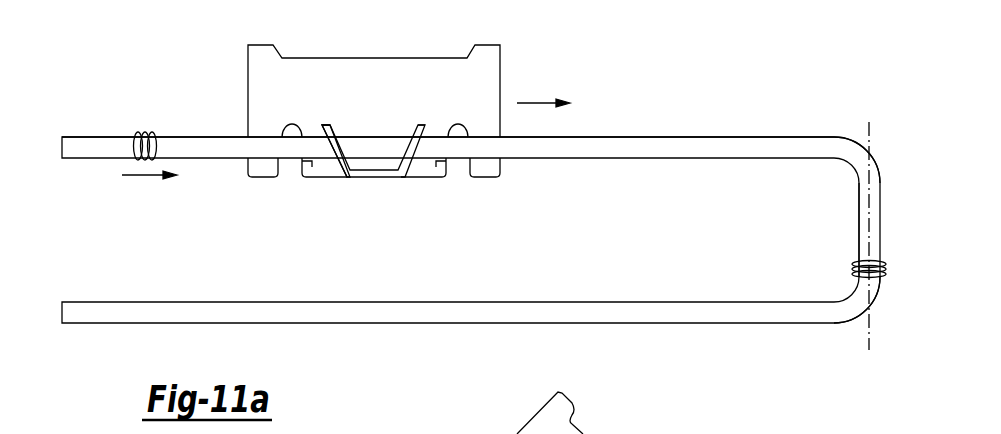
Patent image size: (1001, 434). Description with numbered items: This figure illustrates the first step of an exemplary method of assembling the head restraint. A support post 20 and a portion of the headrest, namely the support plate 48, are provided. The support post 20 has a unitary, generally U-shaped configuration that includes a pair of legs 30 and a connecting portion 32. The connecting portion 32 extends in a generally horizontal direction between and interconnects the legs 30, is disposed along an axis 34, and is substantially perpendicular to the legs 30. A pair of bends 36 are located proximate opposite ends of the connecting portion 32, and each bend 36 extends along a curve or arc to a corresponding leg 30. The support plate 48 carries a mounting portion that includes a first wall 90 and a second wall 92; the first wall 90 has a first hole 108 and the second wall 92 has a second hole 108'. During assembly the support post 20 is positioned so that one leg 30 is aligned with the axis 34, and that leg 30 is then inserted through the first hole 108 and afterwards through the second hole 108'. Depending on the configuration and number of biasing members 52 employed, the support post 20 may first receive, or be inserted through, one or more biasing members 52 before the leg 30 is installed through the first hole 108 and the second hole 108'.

The support post 20 is at (106, 130).
The leg 30 is at (200, 160).
The connecting portion 32 is at (859, 208).
The axis 34 is at (868, 342).
The bend 36 is at (857, 143).
The support plate 48 is at (250, 45).
The biasing member 52 is at (153, 137).
The first wall 90 is at (428, 120).
The second wall 92 is at (323, 120).
The first hole 108 is at (373, 133).
The second hole 108' is at (348, 133).